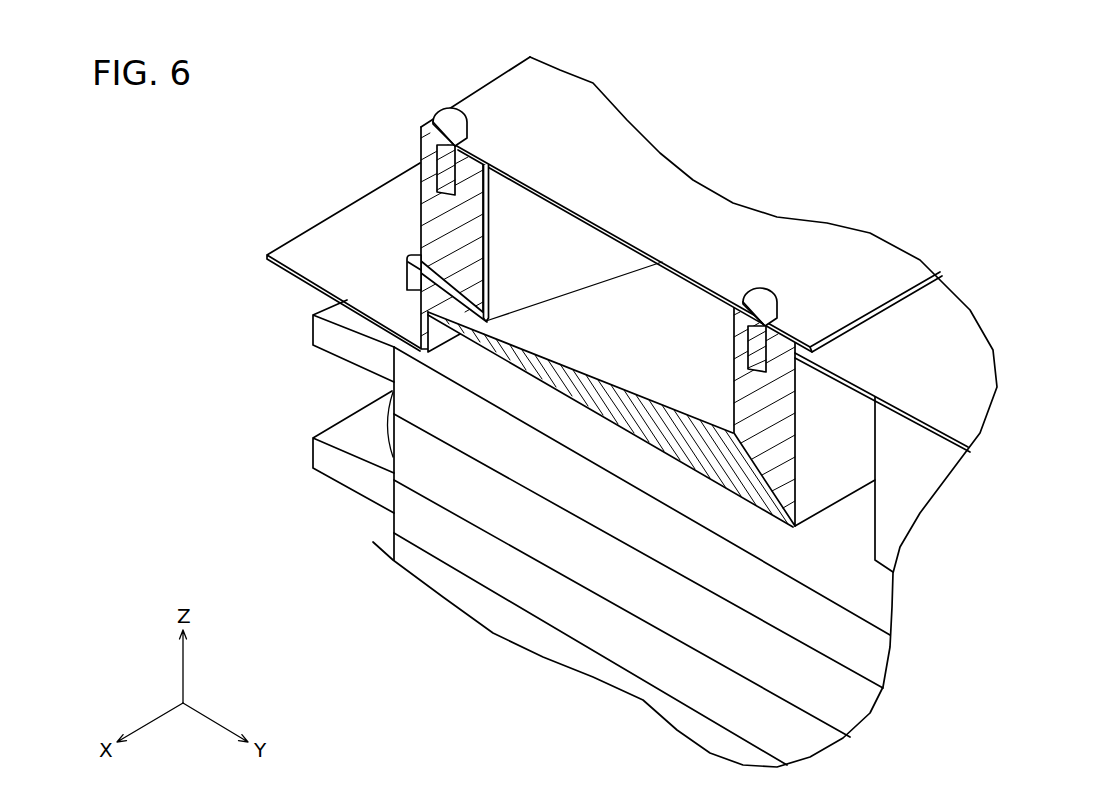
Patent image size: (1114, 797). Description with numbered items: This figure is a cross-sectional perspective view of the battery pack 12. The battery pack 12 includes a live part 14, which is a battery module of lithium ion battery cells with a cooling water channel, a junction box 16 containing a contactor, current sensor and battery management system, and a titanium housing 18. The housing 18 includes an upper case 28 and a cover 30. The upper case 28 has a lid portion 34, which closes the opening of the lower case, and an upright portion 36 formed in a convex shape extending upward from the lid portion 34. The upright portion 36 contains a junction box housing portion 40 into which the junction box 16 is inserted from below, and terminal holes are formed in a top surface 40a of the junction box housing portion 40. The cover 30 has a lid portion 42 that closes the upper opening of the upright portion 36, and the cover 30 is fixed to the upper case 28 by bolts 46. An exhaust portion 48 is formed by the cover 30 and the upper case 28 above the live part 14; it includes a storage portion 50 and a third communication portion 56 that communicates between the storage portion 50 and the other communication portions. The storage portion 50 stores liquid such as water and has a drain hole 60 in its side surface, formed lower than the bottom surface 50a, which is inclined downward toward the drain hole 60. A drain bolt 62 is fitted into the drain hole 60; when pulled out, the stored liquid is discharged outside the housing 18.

The battery pack 12 is at (90, 201).
The live part 14 is at (352, 520).
The junction box 16 is at (927, 476).
The housing 18 is at (466, 72).
The upper case 28 is at (407, 231).
The cover 30 is at (557, 73).
The lid portion 34 is at (306, 243).
The upright portion 36 is at (420, 137).
The junction box housing portion 40 is at (812, 386).
The top surface 40a is at (973, 395).
The lid portion 42 is at (627, 137).
The bolts 46 is at (462, 121).
The exhaust portion 48 is at (675, 298).
The storage portion 50 is at (607, 312).
The bottom surface 50a is at (662, 380).
The third communication portion 56 is at (645, 292).
The drain hole 60 is at (486, 320).
The drain bolt 62 is at (408, 270).